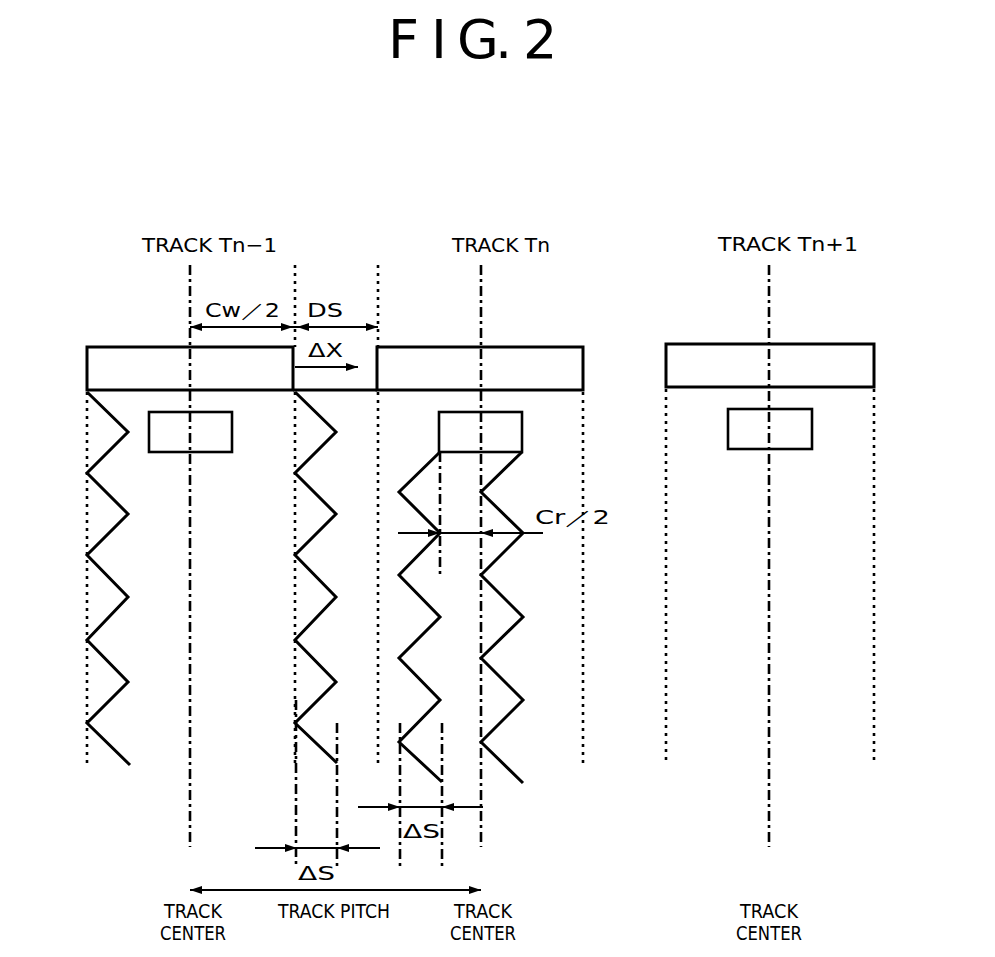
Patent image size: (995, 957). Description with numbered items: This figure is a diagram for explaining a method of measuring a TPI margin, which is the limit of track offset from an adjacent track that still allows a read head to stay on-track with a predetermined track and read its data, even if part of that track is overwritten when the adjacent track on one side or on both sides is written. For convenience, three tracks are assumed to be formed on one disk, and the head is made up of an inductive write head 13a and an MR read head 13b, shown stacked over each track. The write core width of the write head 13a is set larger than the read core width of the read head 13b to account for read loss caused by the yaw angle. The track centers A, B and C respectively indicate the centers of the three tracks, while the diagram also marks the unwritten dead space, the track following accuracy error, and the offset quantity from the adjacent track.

The inductive head (write head) 13a is at (117, 352).
The MR head (read head) 13b is at (207, 452).
The track center of track Tn-1 A is at (191, 573).
The track center of track Tn B is at (482, 573).
The track center of track Tn+1 C is at (768, 573).